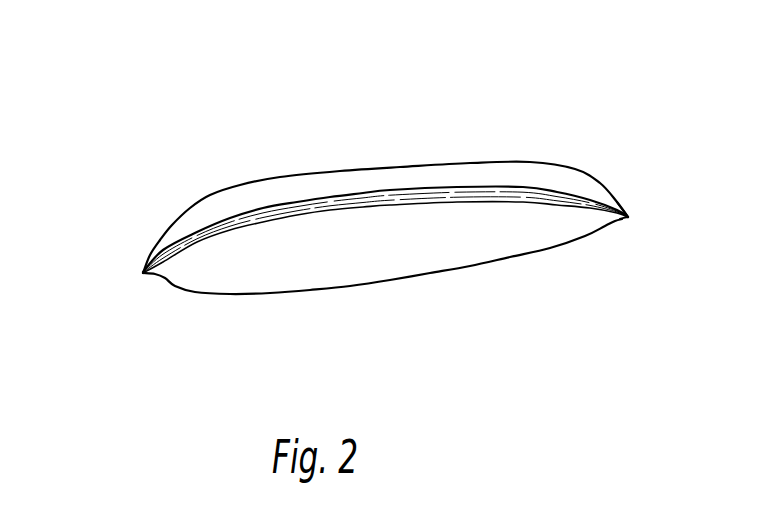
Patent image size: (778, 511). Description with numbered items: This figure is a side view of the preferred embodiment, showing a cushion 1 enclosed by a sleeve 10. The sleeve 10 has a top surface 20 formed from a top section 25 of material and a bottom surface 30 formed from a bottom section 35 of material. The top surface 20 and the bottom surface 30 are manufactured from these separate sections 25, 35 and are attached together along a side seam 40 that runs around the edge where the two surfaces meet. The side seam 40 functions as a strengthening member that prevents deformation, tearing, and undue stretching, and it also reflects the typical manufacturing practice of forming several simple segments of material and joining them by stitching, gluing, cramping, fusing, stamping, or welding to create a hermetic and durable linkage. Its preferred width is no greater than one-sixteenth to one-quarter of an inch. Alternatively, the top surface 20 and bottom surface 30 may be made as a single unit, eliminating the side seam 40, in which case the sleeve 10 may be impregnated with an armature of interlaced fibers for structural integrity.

The cushion 1 is at (503, 48).
The sleeve 10 is at (341, 179).
The top surface 20 is at (560, 177).
The top section 25 is at (344, 180).
The bottom surface 30 is at (397, 253).
The bottom section 35 is at (320, 262).
The side seam 40 is at (628, 217).